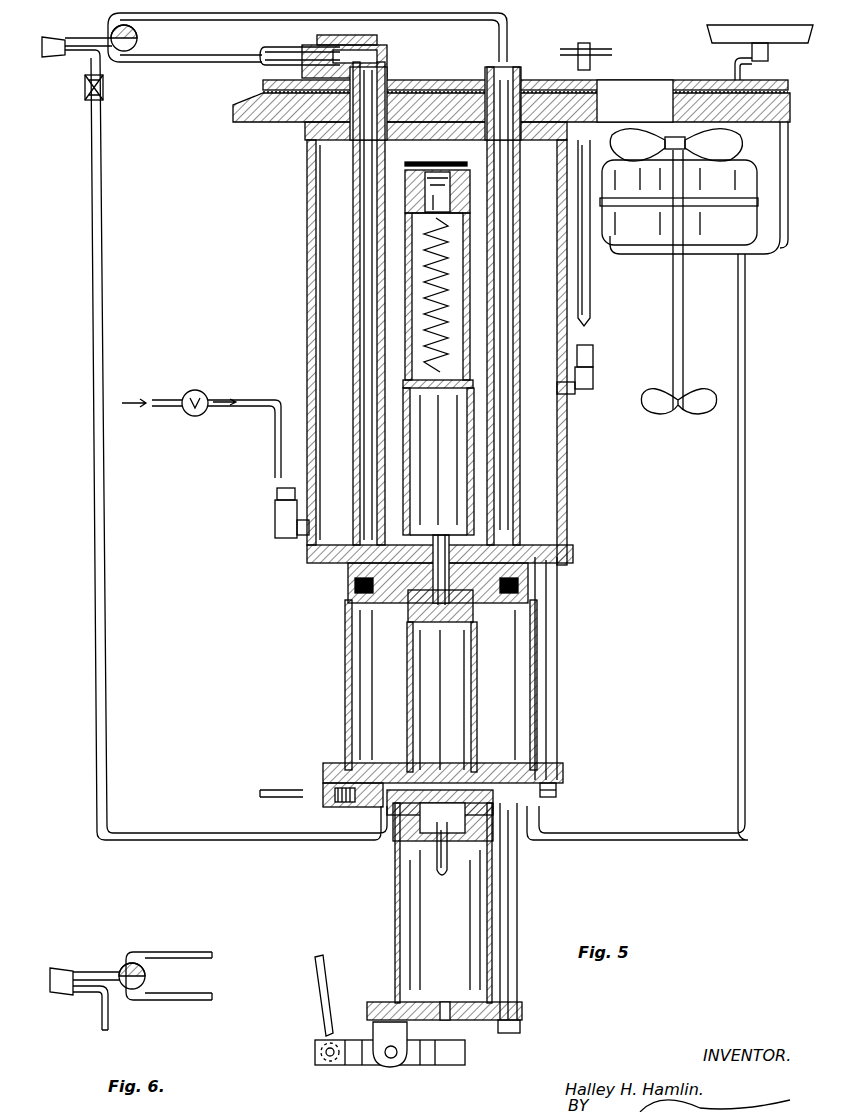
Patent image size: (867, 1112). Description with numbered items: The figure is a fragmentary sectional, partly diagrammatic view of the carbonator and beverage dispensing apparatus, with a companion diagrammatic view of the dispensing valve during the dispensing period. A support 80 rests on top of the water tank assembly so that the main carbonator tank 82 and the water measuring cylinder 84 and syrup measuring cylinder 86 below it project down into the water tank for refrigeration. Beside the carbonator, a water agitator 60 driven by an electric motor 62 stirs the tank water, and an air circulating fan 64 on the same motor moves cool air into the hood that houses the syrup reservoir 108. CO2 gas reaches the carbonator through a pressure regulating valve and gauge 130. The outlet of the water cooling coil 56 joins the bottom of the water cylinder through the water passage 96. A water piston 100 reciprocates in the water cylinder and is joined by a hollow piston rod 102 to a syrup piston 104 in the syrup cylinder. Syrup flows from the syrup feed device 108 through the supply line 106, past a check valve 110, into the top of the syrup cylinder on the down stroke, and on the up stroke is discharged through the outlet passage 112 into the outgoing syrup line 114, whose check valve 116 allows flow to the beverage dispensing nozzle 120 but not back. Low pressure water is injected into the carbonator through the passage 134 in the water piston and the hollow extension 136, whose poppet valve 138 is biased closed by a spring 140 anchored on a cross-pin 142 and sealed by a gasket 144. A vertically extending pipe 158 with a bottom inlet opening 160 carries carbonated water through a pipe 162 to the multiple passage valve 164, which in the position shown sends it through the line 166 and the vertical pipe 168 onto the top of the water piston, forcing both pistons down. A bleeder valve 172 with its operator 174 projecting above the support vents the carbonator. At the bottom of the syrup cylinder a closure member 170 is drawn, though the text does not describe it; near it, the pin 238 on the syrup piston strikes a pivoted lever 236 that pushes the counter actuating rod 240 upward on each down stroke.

In FIG. 5, the water cooling coil 56 is at (250, 783).
In FIG. 5, the water agitator 60 is at (700, 395).
In FIG. 5, the electric motor 62 is at (745, 178).
In FIG. 5, the air circulating fan 64 is at (612, 148).
In FIG. 5, the support 80 is at (245, 105).
In FIG. 5, the carbonator tank 82 is at (310, 262).
In FIG. 5, the water measuring cylinder 84 is at (345, 678).
In FIG. 5, the syrup measuring cylinder 86 is at (395, 920).
In FIG. 5, the water passage 96 is at (372, 790).
In FIG. 5, the water piston 100 is at (362, 608).
In FIG. 5, the hollow piston rod 102 is at (408, 705).
In FIG. 5, the syrup piston 104 is at (408, 848).
In FIG. 5, the syrup supply line 106 is at (747, 573).
In FIG. 5, the syrup feed device 108 is at (790, 40).
In FIG. 5, the check valve 110 is at (755, 62).
In FIG. 5, the outlet passage 112 is at (365, 770).
In FIG. 5, the outgoing syrup line 114 is at (90, 66).
In FIG. 6, the outgoing syrup line 114 is at (100, 1008).
In FIG. 5, the check valve 116 is at (85, 100).
In FIG. 5, the beverage dispensing nozzle 120 is at (52, 37).
In FIG. 6, the beverage dispensing nozzle 120 is at (58, 968).
In FIG. 5, the pressure regulating valve and gauge 130 is at (192, 416).
In FIG. 5, the passage 134 is at (455, 605).
In FIG. 5, the hollow extension 136 is at (405, 323).
In FIG. 5, the poppet valve 138 is at (412, 163).
In FIG. 5, the spring 140 is at (425, 228).
In FIG. 5, the cross-pin 142 is at (435, 378).
In FIG. 5, the sealing gasket 144 is at (418, 190).
In FIG. 5, the vertically extending pipe 158 is at (522, 450).
In FIG. 5, the inlet opening 160 is at (540, 525).
In FIG. 5, the pipe 162 is at (432, 14).
In FIG. 6, the pipe 162 is at (168, 952).
In FIG. 5, the multiple passage valve 164 is at (138, 34).
In FIG. 6, the multiple passage valve 164 is at (148, 973).
In FIG. 5, the line 166 is at (232, 65).
In FIG. 6, the line 166 is at (178, 1000).
In FIG. 5, the vertically extending pipe 168 is at (356, 290).
In FIG. 5, the base plate 170 is at (450, 1020).
In FIG. 5, the bleeder valve 172 is at (590, 398).
In FIG. 5, the operator 174 is at (590, 48).
In FIG. 5, the pivoted lever 236 is at (420, 1058).
In FIG. 5, the pin 238 is at (448, 878).
In FIG. 5, the counter actuating rod 240 is at (318, 988).